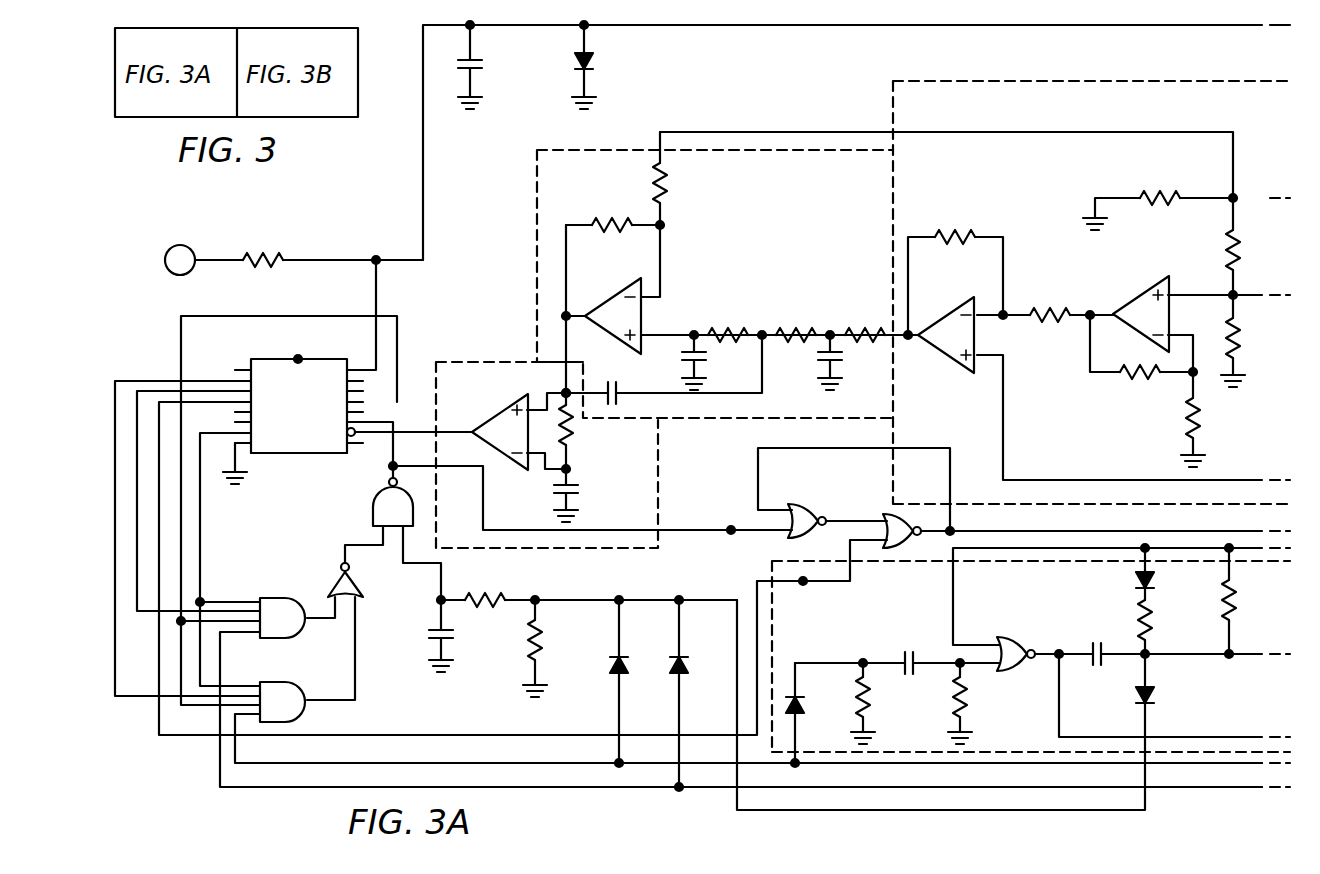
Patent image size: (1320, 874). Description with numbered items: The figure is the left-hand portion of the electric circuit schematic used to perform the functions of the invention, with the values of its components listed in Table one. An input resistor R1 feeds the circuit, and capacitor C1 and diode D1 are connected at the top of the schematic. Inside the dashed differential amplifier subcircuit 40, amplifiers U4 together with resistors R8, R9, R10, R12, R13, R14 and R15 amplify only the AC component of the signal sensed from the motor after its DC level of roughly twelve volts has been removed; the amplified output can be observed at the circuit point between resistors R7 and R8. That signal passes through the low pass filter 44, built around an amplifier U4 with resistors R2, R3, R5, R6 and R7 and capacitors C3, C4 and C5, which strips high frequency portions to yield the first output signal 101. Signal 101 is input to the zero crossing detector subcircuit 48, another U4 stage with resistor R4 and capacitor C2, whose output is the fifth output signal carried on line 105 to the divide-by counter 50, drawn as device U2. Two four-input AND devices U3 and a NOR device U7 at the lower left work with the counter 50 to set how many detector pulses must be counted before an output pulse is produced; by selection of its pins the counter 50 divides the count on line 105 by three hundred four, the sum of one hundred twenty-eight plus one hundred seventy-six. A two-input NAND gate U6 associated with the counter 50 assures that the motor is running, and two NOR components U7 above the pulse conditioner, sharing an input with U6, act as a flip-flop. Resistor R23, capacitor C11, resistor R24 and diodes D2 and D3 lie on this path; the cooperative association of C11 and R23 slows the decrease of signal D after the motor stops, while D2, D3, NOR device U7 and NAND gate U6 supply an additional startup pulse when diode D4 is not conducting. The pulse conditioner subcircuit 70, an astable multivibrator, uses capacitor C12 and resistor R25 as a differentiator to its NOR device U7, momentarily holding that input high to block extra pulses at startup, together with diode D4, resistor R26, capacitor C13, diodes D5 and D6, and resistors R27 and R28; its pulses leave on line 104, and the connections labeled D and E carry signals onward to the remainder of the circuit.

The differential amplifier subcircuit 40 is at (985, 80).
The low pass filter 44 is at (563, 148).
The zero crossing detector subcircuit 48 is at (483, 360).
The divide by counter 50 is at (300, 450).
The pulse conditioner subcircuit 70 is at (770, 565).
The first output signal 101 is at (562, 390).
The line 104 is at (1212, 737).
The line 105 is at (414, 430).
The resistor R1 is at (262, 258).
The resistor R2 is at (612, 218).
The resistor R3 is at (668, 186).
The resistor R4 is at (578, 438).
The resistor R5 is at (728, 330).
The resistor R6 is at (796, 330).
The resistor R7 is at (866, 330).
The resistor R8 is at (956, 233).
The resistor R9 is at (1050, 312).
The resistor R10 is at (1158, 196).
The resistor R12 is at (1225, 308).
The resistor R13 is at (1228, 334).
The resistor R14 is at (1150, 366).
The resistor R15 is at (1190, 419).
The resistor R23 is at (487, 598).
The resistor R24 is at (542, 635).
The resistor R25 is at (875, 690).
The resistor R26 is at (972, 690).
The resistor R27 is at (1152, 625).
The resistor R28 is at (1220, 600).
The capacitor C1 is at (485, 65).
The capacitor C2 is at (580, 490).
The capacitor C3 is at (605, 382).
The capacitor C4 is at (705, 358).
The capacitor C5 is at (848, 380).
The capacitor C11 is at (452, 638).
The capacitor C12 is at (900, 654).
The capacitor C13 is at (1088, 646).
The diode D1 is at (596, 63).
The diode D2 is at (630, 663).
The diode D3 is at (690, 663).
The diode D4 is at (808, 706).
The diode D5 is at (1132, 580).
The diode D6 is at (1156, 693).
The microcontroller U2 is at (270, 358).
The four-input AND device U3 is at (278, 596).
The differential amplifier U4 is at (612, 300).
The NAND device U6 is at (372, 514).
The NOR device U7 is at (358, 582).
The signal D is at (1167, 787).
The output terminal E is at (1238, 765).